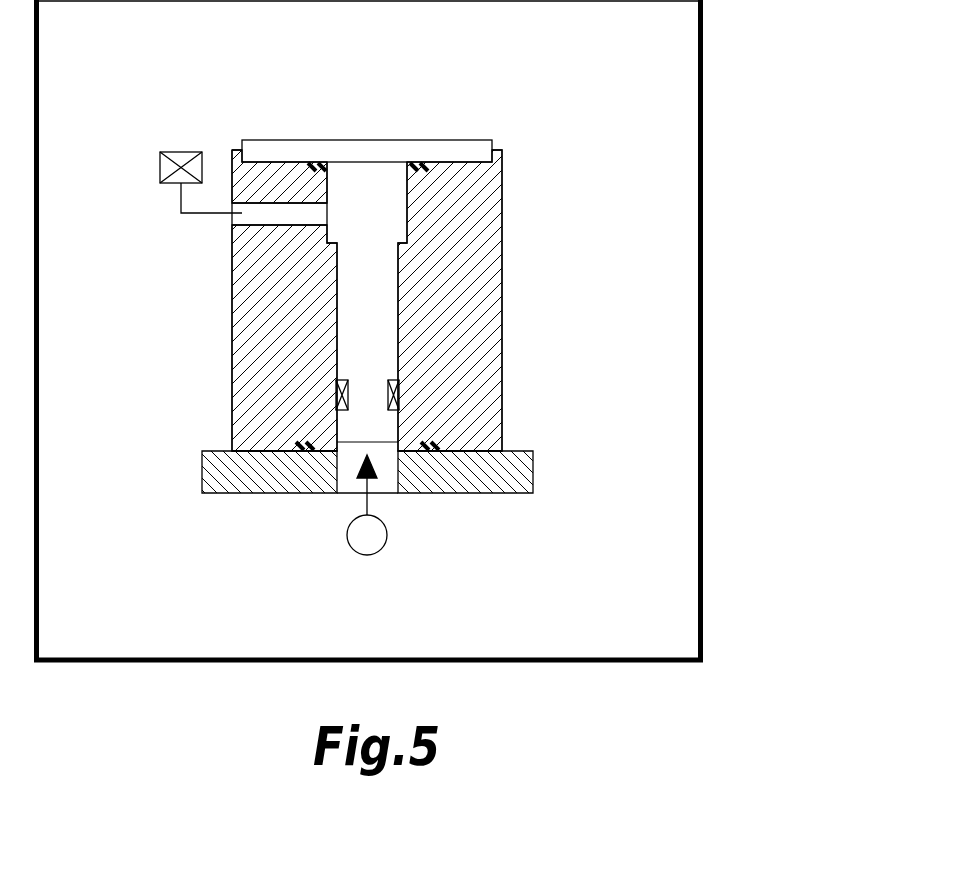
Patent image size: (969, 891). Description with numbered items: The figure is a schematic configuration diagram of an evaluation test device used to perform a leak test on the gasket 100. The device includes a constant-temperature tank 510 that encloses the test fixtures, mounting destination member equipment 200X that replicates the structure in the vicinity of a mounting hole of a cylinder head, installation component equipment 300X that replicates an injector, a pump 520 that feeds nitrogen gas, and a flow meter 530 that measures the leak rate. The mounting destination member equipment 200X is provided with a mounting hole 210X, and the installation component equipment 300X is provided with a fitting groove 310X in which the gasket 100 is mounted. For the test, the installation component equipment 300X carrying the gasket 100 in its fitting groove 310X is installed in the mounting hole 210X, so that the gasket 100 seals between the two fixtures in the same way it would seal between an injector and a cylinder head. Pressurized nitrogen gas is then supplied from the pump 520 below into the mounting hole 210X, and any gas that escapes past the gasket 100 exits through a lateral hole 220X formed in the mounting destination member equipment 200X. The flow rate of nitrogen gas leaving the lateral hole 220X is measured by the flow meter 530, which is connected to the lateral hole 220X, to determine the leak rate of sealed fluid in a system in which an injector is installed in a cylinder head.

The gasket 100 is at (345, 405).
The mounting destination member equipment 200X is at (480, 278).
The mounting hole 210X is at (345, 405).
The lateral hole 220X is at (283, 213).
The installation component equipment 300X is at (368, 183).
The fitting groove 310X is at (392, 395).
The constant-temperature tank 510 is at (703, 100).
The pump 520 is at (368, 535).
The flow meter 530 is at (181, 162).